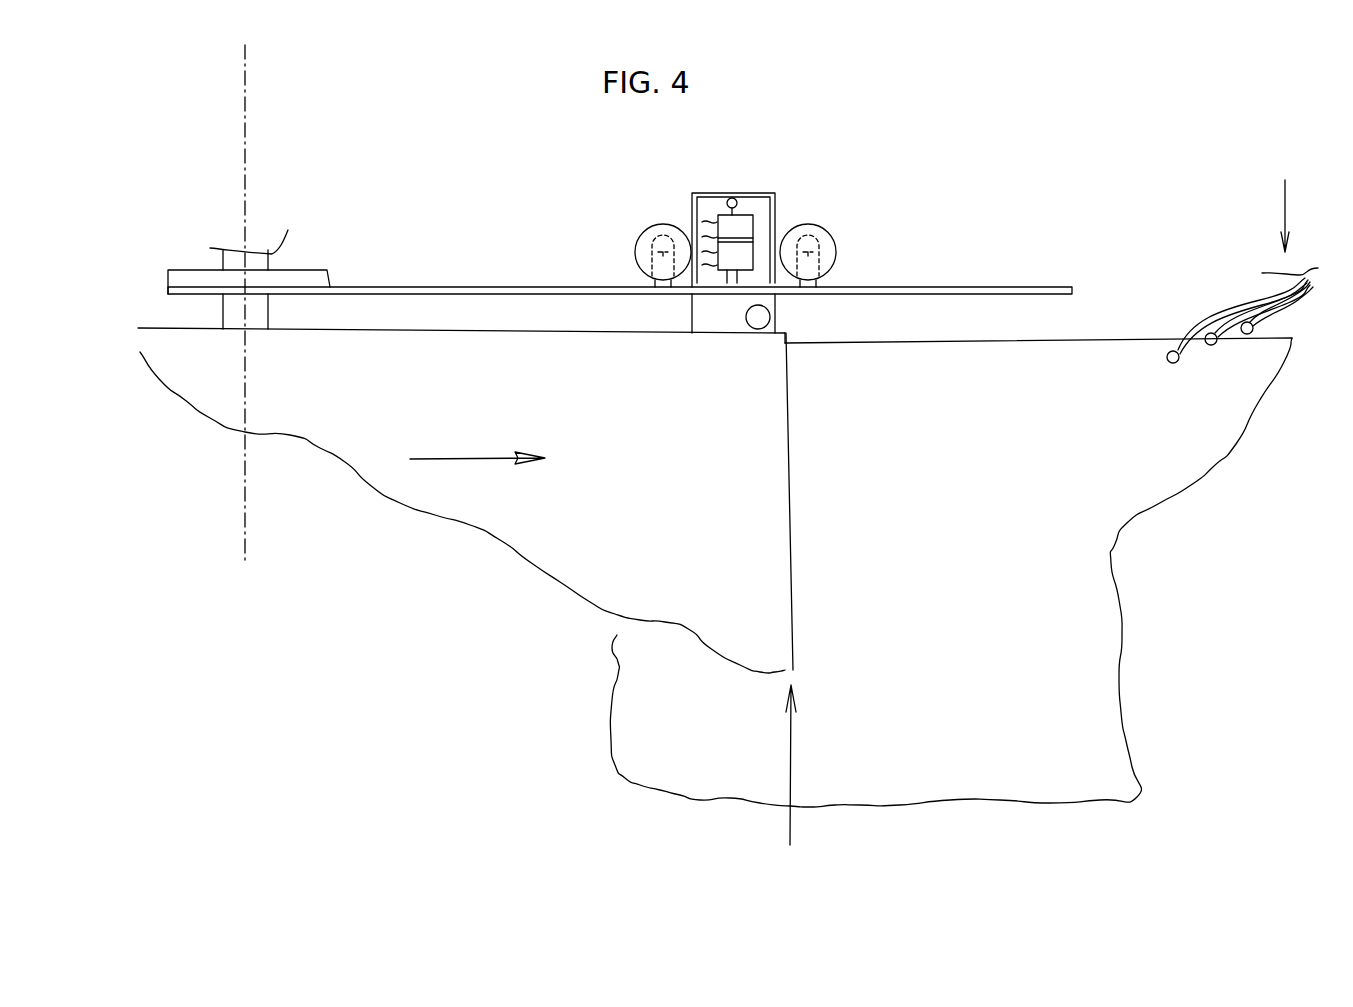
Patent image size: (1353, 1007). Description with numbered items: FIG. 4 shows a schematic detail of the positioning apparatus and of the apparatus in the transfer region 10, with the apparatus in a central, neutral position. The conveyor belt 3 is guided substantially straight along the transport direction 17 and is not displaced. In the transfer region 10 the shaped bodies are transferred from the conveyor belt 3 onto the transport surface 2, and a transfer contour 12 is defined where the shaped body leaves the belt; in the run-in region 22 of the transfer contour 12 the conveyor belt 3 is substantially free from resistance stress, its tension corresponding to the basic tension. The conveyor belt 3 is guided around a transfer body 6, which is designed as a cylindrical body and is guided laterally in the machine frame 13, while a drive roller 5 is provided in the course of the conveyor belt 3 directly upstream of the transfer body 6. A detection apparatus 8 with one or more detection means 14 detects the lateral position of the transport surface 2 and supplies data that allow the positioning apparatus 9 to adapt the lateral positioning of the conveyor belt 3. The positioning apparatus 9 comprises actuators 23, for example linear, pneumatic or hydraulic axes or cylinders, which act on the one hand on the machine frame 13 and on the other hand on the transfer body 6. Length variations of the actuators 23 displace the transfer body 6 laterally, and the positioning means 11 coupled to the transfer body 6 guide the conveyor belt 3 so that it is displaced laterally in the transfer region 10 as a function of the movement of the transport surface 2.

The transport surface 2 is at (1091, 695).
The conveyor belt 3 is at (430, 380).
The drive roller 5 is at (258, 315).
The transfer body 6 is at (735, 312).
The detection apparatus 8 is at (1284, 203).
The positioning apparatus 9 is at (765, 223).
The transfer region 10 is at (788, 782).
The positioning means 11 is at (765, 316).
The transfer contour 12 is at (790, 580).
The machine frame 13 is at (503, 290).
The detection means 14 is at (1247, 322).
The transport direction 17 is at (450, 459).
The run-in region 22 is at (770, 632).
The actuators 23 is at (743, 262).